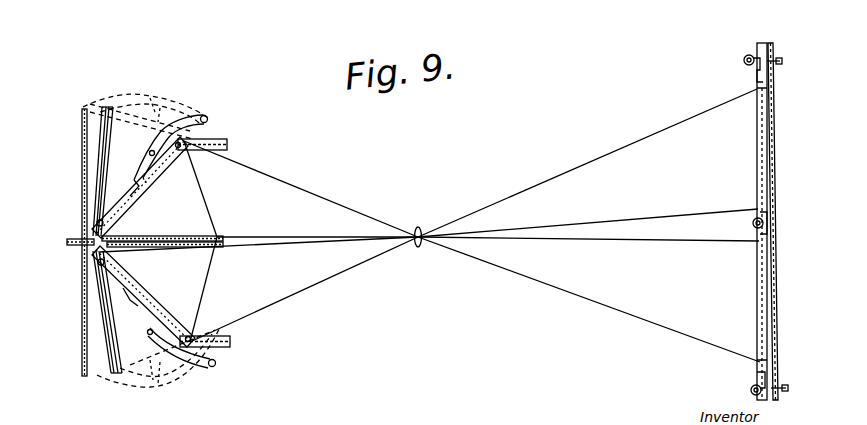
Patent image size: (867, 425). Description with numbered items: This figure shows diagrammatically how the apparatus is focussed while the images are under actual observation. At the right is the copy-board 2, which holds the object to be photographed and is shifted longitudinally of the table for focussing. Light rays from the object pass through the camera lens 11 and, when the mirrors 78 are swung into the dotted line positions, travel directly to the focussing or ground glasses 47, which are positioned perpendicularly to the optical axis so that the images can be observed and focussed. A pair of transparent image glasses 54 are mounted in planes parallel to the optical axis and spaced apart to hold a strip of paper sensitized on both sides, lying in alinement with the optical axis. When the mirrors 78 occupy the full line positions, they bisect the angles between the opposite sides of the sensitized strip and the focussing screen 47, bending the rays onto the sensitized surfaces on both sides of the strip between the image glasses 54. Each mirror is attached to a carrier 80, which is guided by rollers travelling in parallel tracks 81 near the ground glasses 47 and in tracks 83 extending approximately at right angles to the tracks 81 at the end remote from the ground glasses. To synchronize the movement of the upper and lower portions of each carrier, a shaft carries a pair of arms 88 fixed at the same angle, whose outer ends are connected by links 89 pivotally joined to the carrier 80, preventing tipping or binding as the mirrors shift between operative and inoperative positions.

The copy-board 2 is at (762, 156).
The camera lens 11 is at (419, 232).
The focussing or ground glasses 47 is at (83, 137).
The image glasses 54 is at (143, 236).
The mirrors 78 is at (143, 200).
The carriers 80 is at (133, 183).
The guides or tracks 81 is at (102, 157).
The guides or tracks 83 is at (223, 141).
The arms 88 is at (190, 397).
The links 89 is at (146, 168).